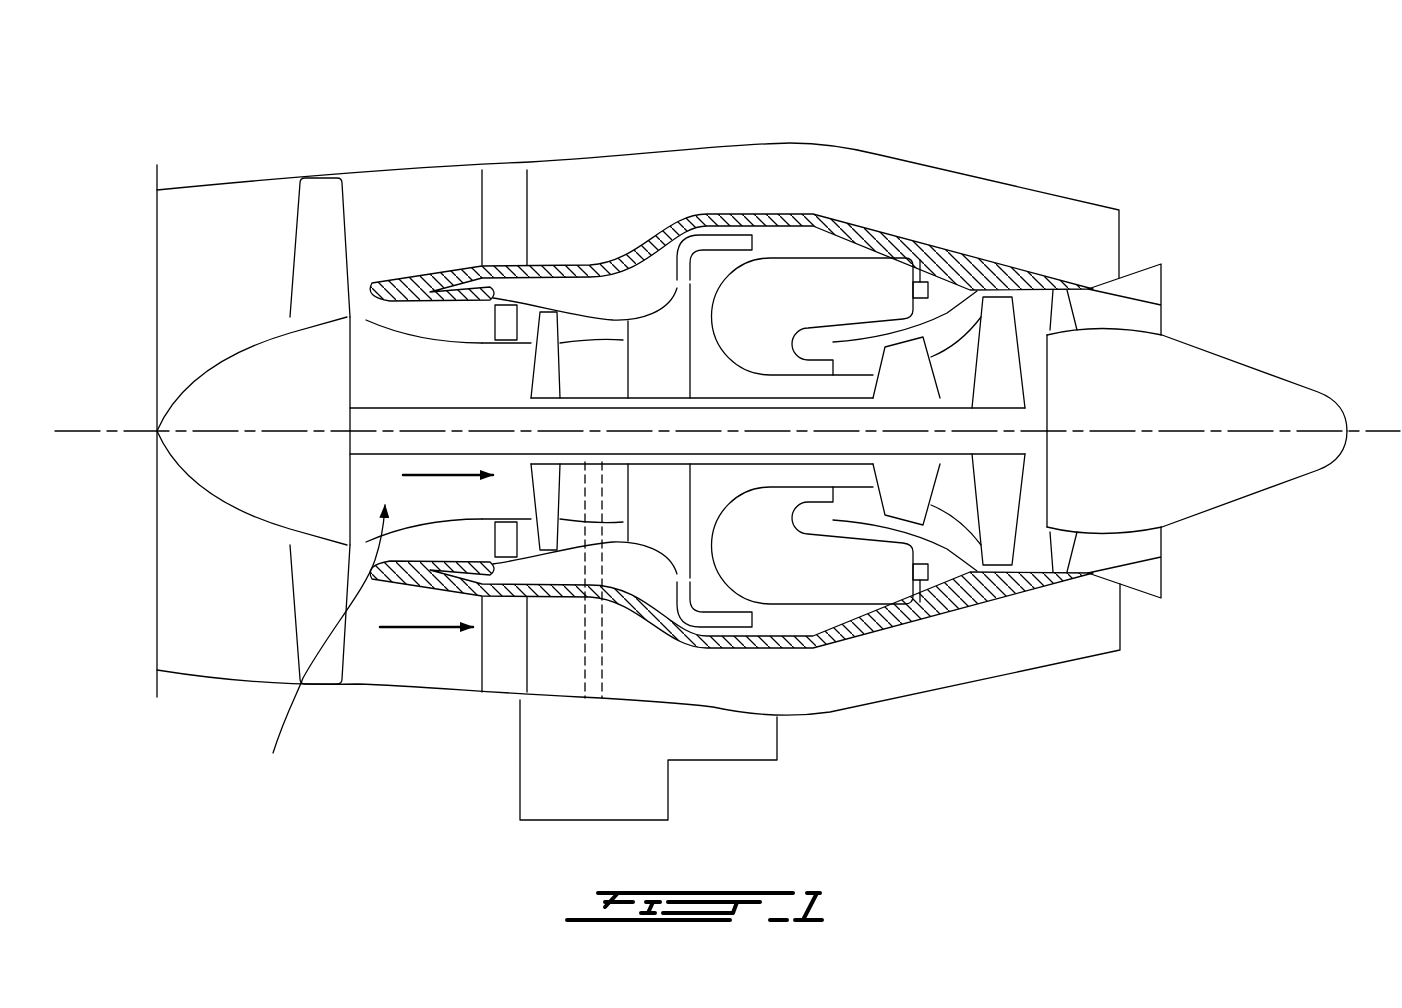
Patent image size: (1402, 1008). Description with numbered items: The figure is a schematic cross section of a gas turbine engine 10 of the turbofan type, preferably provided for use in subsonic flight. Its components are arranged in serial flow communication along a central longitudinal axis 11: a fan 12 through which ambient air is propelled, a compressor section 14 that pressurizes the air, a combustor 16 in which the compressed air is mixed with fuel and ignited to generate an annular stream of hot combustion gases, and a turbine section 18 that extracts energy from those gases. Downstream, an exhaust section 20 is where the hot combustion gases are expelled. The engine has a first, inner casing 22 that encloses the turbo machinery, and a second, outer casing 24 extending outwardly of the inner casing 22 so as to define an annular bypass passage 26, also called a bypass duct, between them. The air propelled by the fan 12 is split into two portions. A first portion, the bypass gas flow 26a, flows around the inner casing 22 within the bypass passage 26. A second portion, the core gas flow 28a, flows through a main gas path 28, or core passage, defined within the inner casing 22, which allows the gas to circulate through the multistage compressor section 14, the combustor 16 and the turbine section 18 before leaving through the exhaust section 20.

The gas turbine engine 10 is at (927, 140).
The central longitudinal axis 11 is at (1387, 431).
The fan 12 is at (315, 592).
The compressor section 14 is at (583, 323).
The combustor 16 is at (813, 282).
The turbine section 18 is at (953, 500).
The exhaust section 20 is at (1125, 556).
The inner casing 22 is at (820, 648).
The outer casing 24 is at (403, 690).
The bypass passage 26 is at (890, 668).
The bypass gas flow 26a is at (432, 633).
The main gas path 28 is at (319, 648).
The core gas flow 28a is at (442, 473).